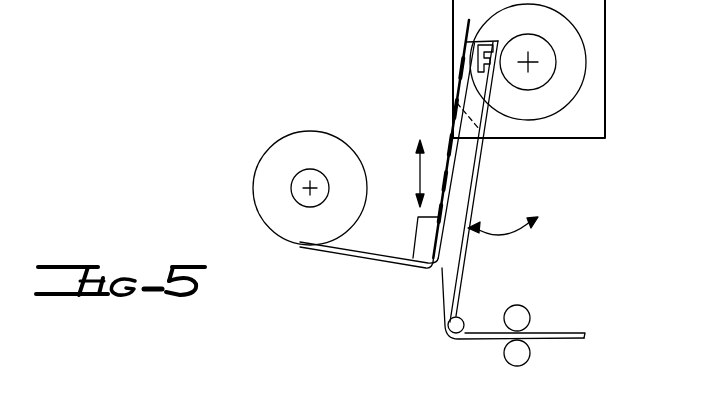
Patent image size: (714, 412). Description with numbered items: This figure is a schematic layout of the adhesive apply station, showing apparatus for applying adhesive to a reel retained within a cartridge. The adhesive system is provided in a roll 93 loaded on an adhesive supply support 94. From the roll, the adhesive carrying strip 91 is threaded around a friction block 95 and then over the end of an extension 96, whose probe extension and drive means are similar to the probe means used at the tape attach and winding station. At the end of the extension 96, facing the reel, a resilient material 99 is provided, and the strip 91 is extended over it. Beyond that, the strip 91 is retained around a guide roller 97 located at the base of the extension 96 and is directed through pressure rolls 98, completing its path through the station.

The adhesive carrying strip 91 is at (386, 257).
The roll 93 is at (257, 212).
The adhesive supply support 94 is at (300, 207).
The friction block 95 is at (417, 270).
The extension 96 is at (449, 204).
The guide roller 97 is at (454, 340).
The pressure rolls 98 is at (525, 355).
The resilient material 99 is at (497, 62).